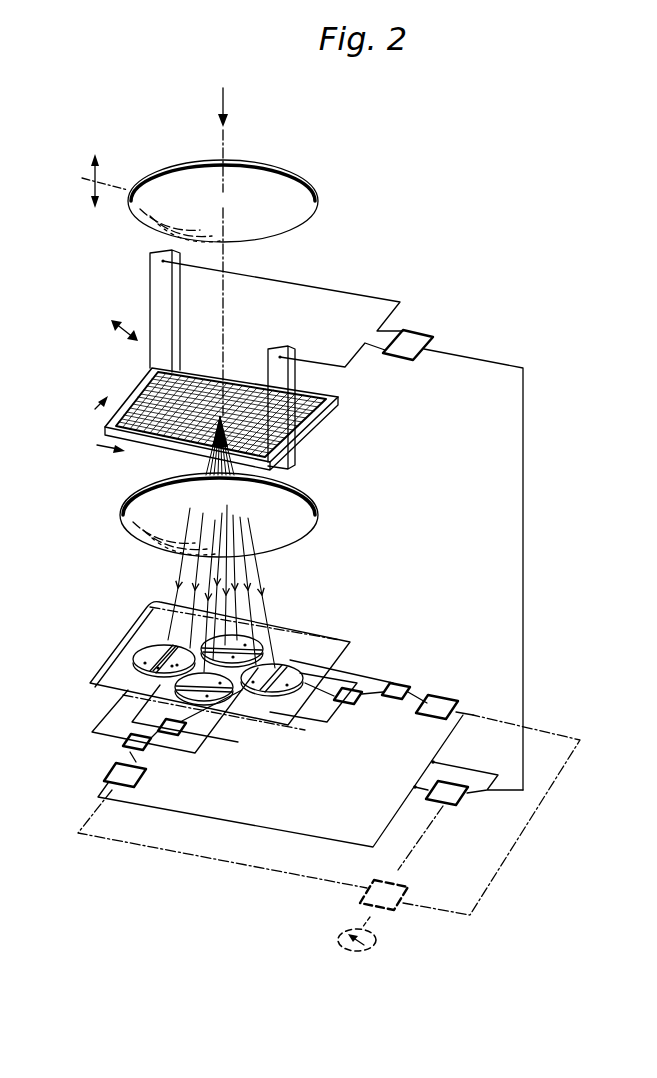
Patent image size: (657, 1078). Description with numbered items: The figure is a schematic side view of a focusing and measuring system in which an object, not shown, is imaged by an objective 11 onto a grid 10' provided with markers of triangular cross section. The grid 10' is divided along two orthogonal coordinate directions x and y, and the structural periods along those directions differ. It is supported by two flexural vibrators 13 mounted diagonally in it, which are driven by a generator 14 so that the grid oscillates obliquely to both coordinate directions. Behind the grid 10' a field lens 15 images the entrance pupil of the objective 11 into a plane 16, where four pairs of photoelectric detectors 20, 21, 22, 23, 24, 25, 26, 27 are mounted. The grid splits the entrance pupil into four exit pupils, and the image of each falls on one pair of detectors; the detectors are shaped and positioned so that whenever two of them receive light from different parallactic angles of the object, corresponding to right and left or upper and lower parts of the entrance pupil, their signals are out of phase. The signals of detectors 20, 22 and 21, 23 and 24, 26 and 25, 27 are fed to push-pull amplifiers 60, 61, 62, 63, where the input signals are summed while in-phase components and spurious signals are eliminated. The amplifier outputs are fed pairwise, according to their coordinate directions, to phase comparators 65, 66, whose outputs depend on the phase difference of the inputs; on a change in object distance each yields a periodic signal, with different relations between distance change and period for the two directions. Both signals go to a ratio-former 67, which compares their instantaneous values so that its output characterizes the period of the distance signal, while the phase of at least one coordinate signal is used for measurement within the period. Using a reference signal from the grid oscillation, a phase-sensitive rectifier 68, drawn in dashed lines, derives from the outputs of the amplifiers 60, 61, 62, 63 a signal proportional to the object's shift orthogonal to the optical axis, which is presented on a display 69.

The grid 10' is at (182, 421).
The objective 11 is at (297, 203).
The flexural vibrators 13 is at (163, 285).
The generator 14 is at (410, 342).
The field lens 15 is at (140, 510).
The plane 16 is at (322, 647).
The photoelectric detector 20 is at (145, 663).
The photoelectric detector 21 is at (190, 650).
The photoelectric detector 22 is at (253, 682).
The photoelectric detector 23 is at (287, 685).
The photoelectric detector 24 is at (247, 643).
The photoelectric detector 25 is at (234, 656).
The photoelectric detector 26 is at (158, 668).
The photoelectric detector 27 is at (172, 666).
The push-pull amplifier 60 is at (127, 746).
The push-pull amplifier 61 is at (180, 735).
The push-pull amplifier 62 is at (405, 683).
The push-pull amplifier 63 is at (353, 703).
The phase comparator 65 is at (118, 770).
The phase comparator 66 is at (443, 700).
The ratio-former 67 is at (455, 805).
The phase-sensitive rectifier 68 is at (392, 903).
The display 69 is at (360, 952).